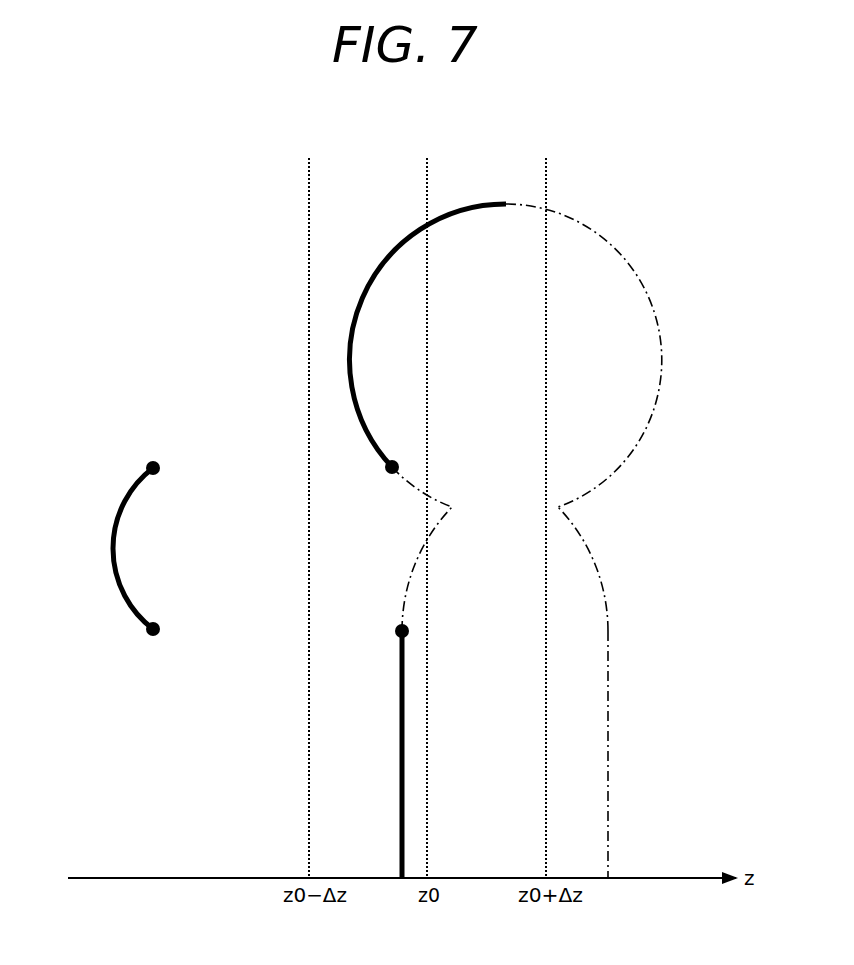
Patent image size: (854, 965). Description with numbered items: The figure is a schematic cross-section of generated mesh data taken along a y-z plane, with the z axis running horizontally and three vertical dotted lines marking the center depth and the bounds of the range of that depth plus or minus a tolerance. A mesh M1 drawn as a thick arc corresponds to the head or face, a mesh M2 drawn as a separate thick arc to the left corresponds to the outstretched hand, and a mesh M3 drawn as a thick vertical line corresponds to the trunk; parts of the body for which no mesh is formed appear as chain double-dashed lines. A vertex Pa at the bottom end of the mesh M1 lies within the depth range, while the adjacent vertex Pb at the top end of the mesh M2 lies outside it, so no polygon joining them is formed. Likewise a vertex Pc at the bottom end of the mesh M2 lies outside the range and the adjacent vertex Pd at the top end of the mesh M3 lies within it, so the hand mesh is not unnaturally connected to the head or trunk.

The mesh M1 is at (393, 250).
The mesh M2 is at (115, 527).
The mesh M3 is at (400, 750).
The vertex Pa is at (388, 472).
The vertex Pb is at (150, 462).
The vertex Pc is at (148, 638).
The vertex Pd is at (400, 625).